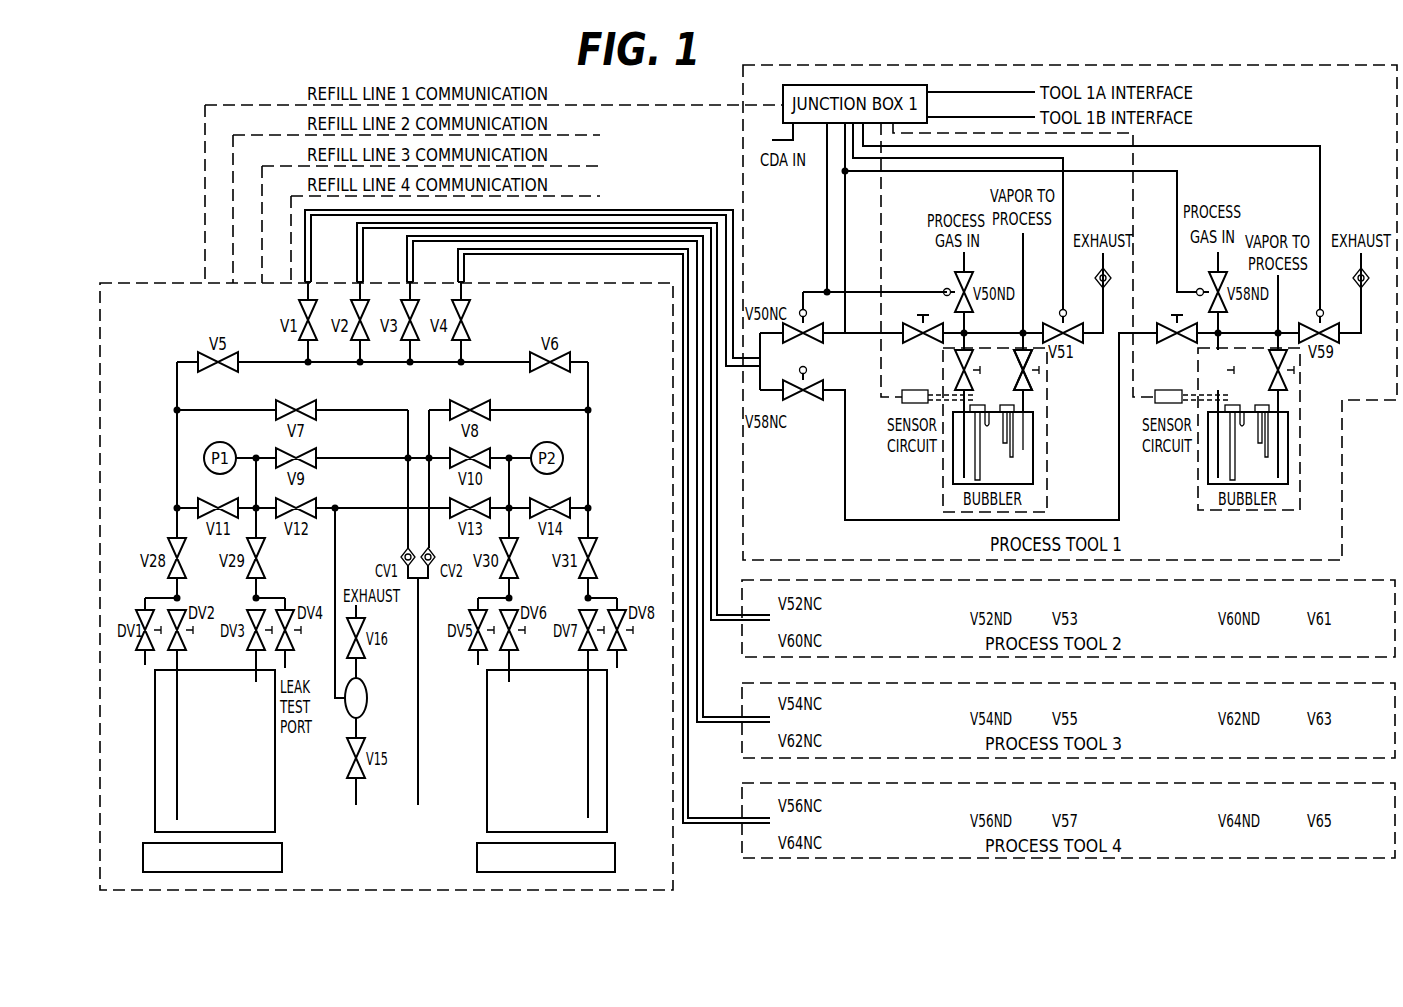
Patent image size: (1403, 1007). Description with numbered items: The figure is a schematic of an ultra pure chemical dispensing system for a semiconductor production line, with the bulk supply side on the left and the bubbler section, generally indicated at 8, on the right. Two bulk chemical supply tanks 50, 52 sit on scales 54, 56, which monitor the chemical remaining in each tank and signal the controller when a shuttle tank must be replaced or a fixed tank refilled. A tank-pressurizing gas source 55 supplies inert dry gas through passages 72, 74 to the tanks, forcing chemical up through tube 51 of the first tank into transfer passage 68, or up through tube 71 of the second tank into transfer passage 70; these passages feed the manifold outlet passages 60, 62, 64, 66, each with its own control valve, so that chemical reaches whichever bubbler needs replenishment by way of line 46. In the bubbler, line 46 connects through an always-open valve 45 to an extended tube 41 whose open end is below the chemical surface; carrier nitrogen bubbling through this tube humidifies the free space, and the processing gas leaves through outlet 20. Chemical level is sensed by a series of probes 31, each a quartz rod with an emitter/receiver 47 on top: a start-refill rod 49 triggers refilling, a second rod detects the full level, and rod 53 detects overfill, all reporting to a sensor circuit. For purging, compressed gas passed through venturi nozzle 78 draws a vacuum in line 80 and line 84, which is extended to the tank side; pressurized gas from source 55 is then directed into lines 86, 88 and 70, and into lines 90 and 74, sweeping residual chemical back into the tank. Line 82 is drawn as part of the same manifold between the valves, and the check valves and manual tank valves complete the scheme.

The vapor delivery system 8 is at (1284, 221).
The outlet 20 is at (1035, 422).
The probes 31 is at (982, 470).
The tube 41 is at (962, 464).
The valve 45 is at (954, 376).
The line 46 is at (537, 495).
The signal beam emitter/receiver components 47 is at (987, 403).
The start-refill rod 49 is at (1014, 450).
The bulk chemical supply tank 50 is at (276, 806).
The tube 51 is at (178, 713).
The bulk chemical supply tank 52 is at (487, 810).
The overfill level sensor probe 53 is at (993, 435).
The scale 54 is at (284, 857).
The tank-pressurizing gas source 55 is at (388, 808).
The scale 56 is at (476, 857).
The outlet passage 60 is at (312, 266).
The outlet passage 62 is at (363, 270).
The outlet passage 64 is at (413, 272).
The outlet passage 66 is at (464, 274).
The transfer passage 68 is at (176, 452).
The transfer passage 70 is at (589, 438).
The tube 71 is at (586, 716).
The passage 72 is at (255, 487).
The passage 74 is at (510, 500).
The venturi nozzle 78 is at (368, 698).
The line 80 is at (338, 560).
The first manifold line 82 is at (352, 410).
The line 84 is at (345, 508).
The line 86 is at (417, 726).
The line 88 is at (513, 410).
The line 90 is at (575, 505).